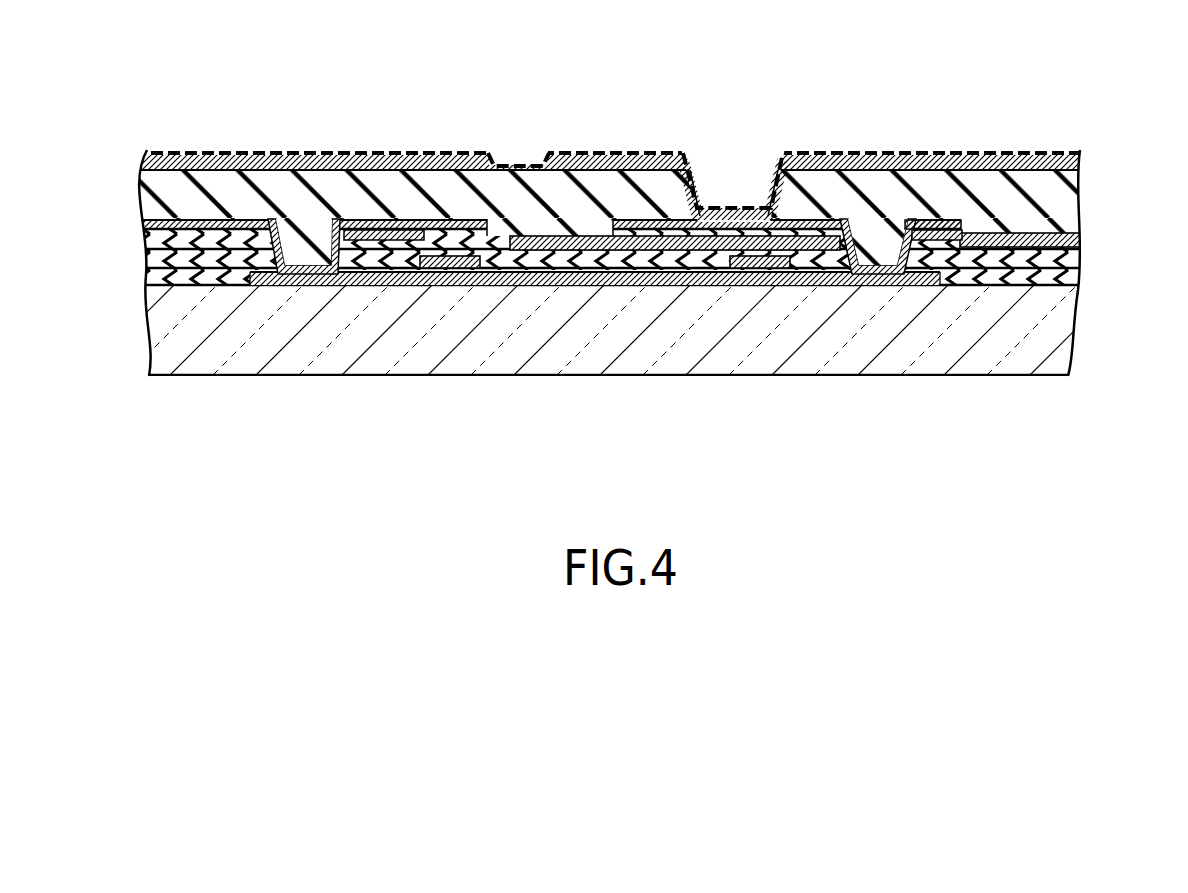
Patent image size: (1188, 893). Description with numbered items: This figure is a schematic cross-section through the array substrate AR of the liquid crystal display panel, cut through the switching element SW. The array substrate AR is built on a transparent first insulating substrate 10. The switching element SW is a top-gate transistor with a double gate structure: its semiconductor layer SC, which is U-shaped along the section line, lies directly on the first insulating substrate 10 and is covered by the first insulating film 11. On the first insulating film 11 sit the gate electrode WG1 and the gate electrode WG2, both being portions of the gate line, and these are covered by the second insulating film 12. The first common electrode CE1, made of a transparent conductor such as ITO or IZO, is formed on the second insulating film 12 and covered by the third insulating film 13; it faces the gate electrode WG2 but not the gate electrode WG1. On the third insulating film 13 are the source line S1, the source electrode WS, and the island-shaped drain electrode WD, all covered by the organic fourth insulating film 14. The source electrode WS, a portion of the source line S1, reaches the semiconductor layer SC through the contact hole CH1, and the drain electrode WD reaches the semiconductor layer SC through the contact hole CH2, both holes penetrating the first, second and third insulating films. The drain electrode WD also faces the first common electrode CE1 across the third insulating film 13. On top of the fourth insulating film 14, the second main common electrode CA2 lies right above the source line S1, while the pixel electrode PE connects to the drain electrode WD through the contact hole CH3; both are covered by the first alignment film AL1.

The first insulating substrate 10 is at (146, 328).
The first insulating film 11 is at (149, 276).
The second insulating film 12 is at (155, 258).
The third insulating film 13 is at (157, 238).
The fourth insulating film 14 is at (147, 202).
The first alignment film AL1 is at (170, 152).
The source line S1 is at (241, 152).
The contact hole CH1 is at (284, 252).
The contact hole CH2 is at (855, 236).
The contact hole CH3 is at (764, 196).
The second main common electrode CA2 is at (310, 217).
The source electrode WS is at (349, 252).
The drain electrode WD is at (936, 230).
The gate electrode WG1 is at (452, 256).
The gate electrode WG2 is at (768, 272).
The first common electrode CE1 is at (604, 222).
The pixel electrode PE is at (1000, 222).
The semiconductor layer SC is at (549, 286).
The switching element SW is at (380, 290).
The array substrate AR is at (1086, 167).